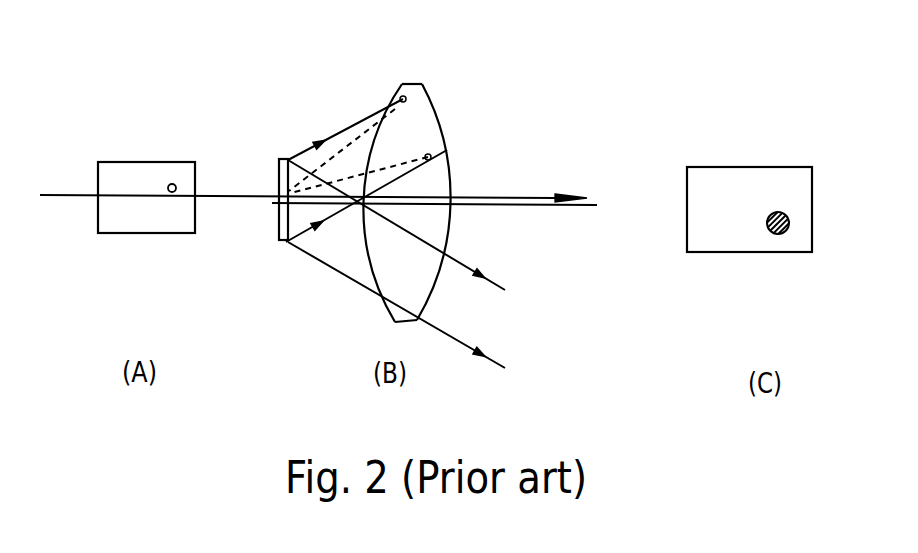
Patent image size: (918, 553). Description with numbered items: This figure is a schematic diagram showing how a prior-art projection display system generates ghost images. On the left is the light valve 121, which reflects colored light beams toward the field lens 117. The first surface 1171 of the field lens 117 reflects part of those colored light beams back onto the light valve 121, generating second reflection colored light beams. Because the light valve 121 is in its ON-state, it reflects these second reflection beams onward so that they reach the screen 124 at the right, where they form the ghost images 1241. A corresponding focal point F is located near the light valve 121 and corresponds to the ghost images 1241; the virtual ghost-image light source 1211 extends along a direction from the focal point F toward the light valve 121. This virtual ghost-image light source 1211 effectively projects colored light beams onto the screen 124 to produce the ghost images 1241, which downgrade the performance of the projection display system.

The light valve 121 is at (167, 233).
The virtual ghost-image light source 1211 is at (170, 185).
The focal point F is at (278, 192).
The field lens 117 is at (439, 168).
The first surface 1171 is at (437, 118).
The screen 124 is at (702, 252).
The ghost images 1241 is at (777, 212).